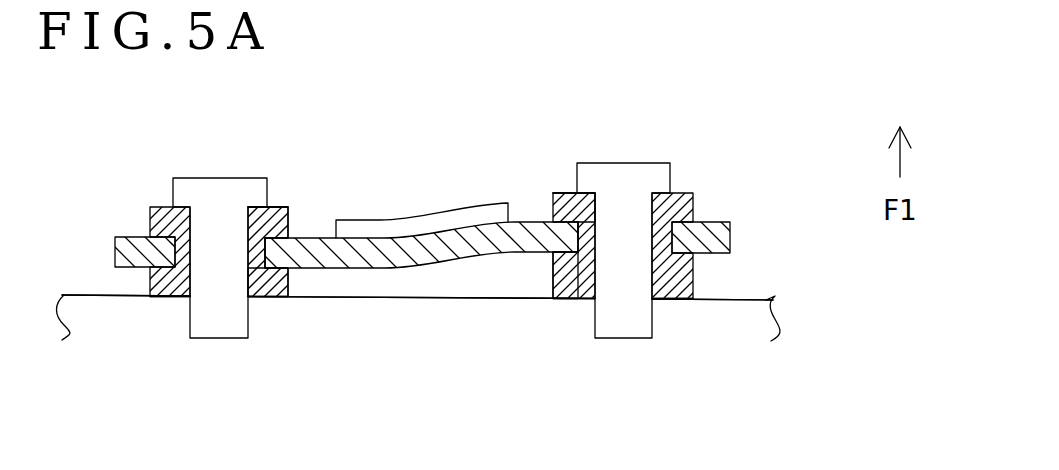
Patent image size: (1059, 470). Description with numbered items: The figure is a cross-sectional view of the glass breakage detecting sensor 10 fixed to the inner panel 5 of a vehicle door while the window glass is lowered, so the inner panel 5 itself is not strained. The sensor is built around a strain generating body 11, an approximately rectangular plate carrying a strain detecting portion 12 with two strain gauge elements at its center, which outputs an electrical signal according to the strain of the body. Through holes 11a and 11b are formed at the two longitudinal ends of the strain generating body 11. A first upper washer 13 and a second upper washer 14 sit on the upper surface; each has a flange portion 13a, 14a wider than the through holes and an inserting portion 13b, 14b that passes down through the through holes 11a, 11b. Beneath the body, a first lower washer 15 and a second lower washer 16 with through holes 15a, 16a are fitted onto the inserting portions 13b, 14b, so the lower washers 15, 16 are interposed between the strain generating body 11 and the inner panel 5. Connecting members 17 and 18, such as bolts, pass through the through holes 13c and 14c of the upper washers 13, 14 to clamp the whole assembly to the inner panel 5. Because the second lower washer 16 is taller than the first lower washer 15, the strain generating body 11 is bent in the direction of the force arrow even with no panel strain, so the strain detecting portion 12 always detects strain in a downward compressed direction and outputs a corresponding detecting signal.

The inner panel 5 is at (773, 297).
The glass breakage detecting sensor 10 is at (757, 125).
The strain generating body 11 is at (425, 253).
The through hole 11a is at (150, 207).
The through hole 11b is at (657, 227).
The strain detecting portion 12 is at (420, 220).
The first upper washer 13 is at (148, 217).
The flange portion 13a is at (283, 205).
The first inserting portion 13b is at (250, 297).
The through hole 13c is at (250, 215).
The second upper washer 14 is at (696, 200).
The flange portion 14a is at (562, 192).
The second inserting portion 14b is at (585, 290).
The through hole 14c is at (597, 198).
The first lower washer 15 is at (158, 287).
The through hole 15a is at (185, 297).
The second lower washer 16 is at (685, 277).
The through hole 16a is at (658, 290).
The connecting member 17 is at (188, 188).
The connecting member 18 is at (642, 170).